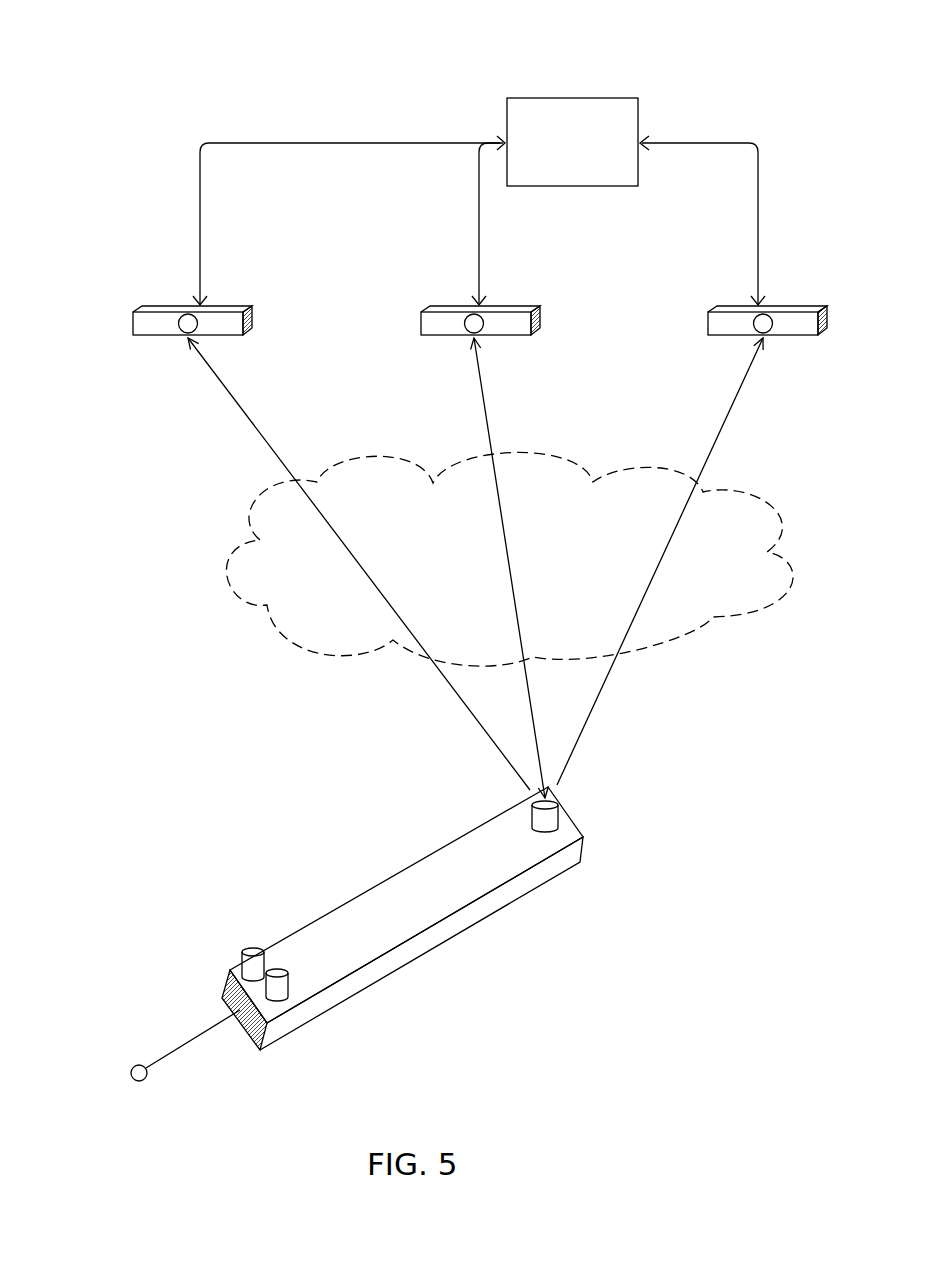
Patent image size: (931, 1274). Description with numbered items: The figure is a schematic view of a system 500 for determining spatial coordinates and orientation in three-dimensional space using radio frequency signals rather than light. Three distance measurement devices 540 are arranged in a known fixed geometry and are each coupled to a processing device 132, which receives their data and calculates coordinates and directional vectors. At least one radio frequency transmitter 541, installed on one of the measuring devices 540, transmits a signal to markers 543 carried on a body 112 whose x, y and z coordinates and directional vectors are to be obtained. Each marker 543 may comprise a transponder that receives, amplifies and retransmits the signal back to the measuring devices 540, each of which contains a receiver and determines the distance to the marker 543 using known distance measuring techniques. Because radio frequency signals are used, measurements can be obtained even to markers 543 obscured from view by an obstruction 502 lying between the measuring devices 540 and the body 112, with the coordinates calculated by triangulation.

The system 500 is at (130, 146).
The processing device 132 is at (556, 154).
The distance measurement device 540 is at (150, 308).
The radio frequency transmitter 541 is at (445, 337).
The obstruction 502 is at (406, 528).
The body 112 is at (423, 855).
The marker 543 is at (549, 814).